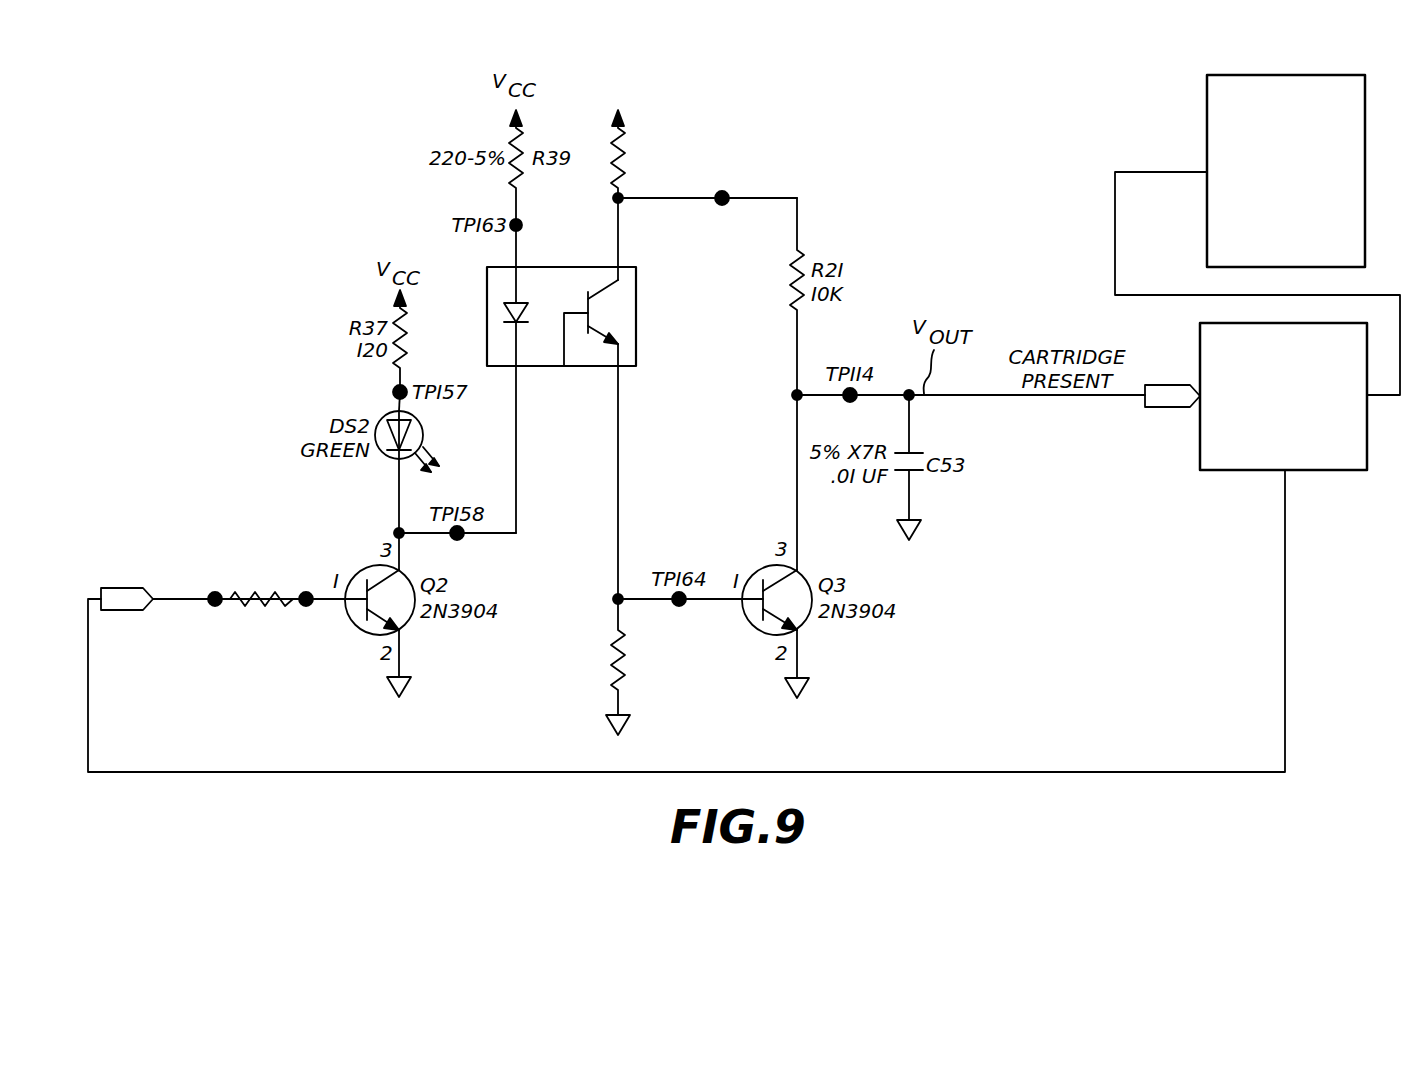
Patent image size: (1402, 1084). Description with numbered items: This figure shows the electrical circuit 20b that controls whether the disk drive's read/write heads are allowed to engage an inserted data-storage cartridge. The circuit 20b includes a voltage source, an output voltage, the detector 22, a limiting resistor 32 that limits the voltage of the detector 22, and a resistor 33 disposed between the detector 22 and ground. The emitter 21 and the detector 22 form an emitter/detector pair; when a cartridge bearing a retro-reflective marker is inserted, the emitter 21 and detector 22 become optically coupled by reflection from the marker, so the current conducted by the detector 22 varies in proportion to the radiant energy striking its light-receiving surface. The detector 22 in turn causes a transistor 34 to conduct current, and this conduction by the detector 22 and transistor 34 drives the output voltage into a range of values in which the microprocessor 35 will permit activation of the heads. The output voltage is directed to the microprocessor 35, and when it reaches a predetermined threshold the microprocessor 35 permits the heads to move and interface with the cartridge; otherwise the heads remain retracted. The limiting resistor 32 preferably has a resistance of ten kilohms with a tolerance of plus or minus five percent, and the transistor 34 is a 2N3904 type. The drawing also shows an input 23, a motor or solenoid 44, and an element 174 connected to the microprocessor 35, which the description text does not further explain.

The limiting resistor 32 is at (668, 133).
The electrical circuit 20b is at (822, 108).
The detector 22 is at (591, 222).
The emitter 21 is at (506, 313).
The transistor 34 is at (612, 336).
The resistor 33 is at (651, 683).
The LED control input 23 is at (215, 586).
The motor or solenoid 44 is at (1286, 171).
The motor or solenoid 174 is at (1286, 171).
The microprocessor 35 is at (1283, 396).